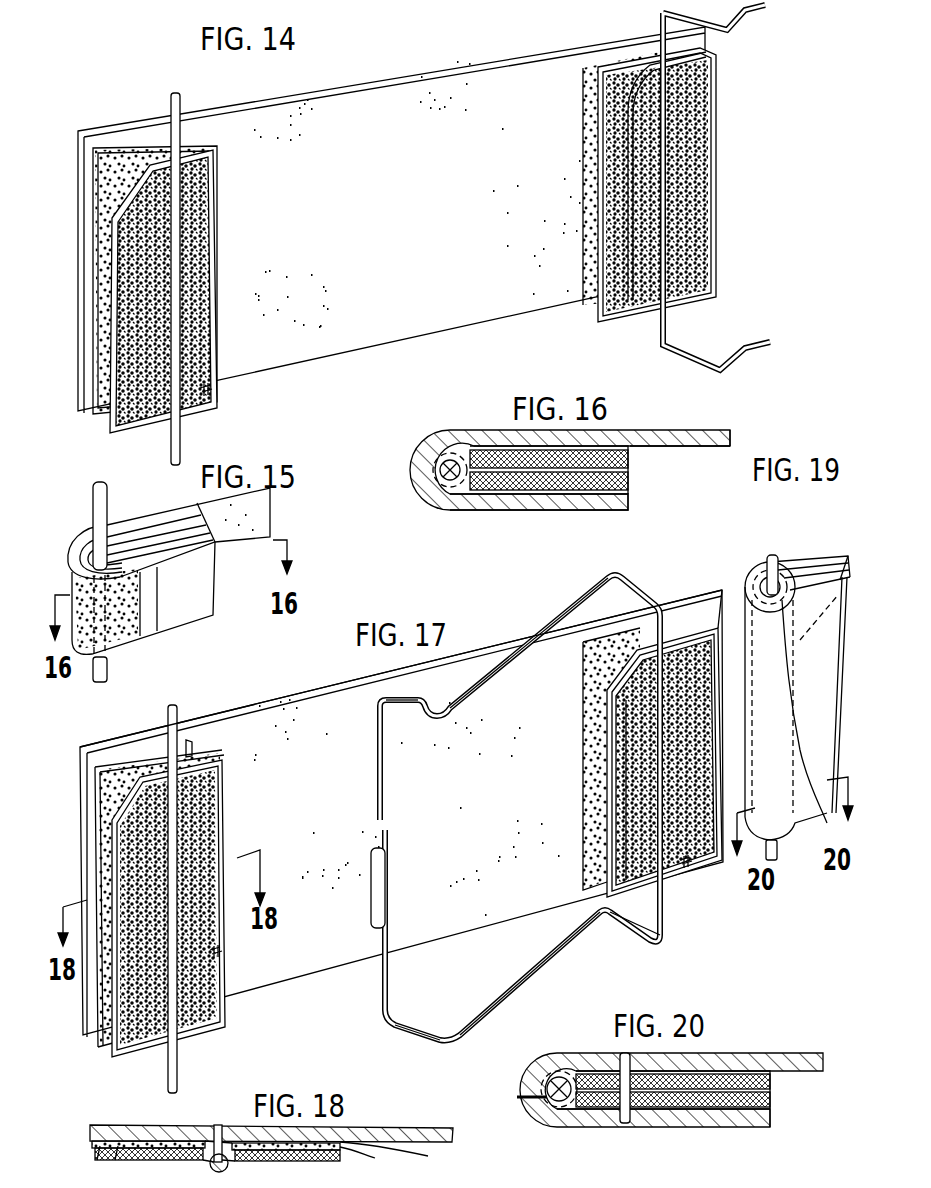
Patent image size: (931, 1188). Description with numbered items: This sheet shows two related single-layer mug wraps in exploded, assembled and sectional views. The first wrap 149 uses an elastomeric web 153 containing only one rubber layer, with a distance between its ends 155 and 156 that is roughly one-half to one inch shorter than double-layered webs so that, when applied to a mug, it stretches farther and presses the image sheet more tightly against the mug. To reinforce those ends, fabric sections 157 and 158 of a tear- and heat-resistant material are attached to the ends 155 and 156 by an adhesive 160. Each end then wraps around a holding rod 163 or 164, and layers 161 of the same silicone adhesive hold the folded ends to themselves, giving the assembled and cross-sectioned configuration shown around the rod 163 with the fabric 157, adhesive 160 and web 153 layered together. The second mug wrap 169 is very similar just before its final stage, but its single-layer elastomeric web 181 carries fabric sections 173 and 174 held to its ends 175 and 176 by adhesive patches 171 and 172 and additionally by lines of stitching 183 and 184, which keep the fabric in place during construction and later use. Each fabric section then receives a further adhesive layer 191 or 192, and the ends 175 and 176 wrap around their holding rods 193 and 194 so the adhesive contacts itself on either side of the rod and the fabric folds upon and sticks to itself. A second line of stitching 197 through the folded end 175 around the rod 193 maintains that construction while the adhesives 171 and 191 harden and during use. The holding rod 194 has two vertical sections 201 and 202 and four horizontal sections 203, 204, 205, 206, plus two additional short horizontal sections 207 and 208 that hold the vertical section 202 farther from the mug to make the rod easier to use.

In FIG. 14, the wrap 149 is at (318, 76).
In FIG. 15, the wrap 149 is at (58, 570).
In FIG. 16, the wrap 149 is at (634, 425).
In FIG. 14, the elastomeric web 153 is at (398, 334).
In FIG. 15, the elastomeric web 153 is at (262, 511).
In FIG. 16, the elastomeric web 153 is at (697, 424).
In FIG. 14, the end 155 is at (80, 342).
In FIG. 15, the end 155 is at (188, 504).
In FIG. 16, the end 155 is at (520, 511).
In FIG. 14, the end 156 is at (716, 174).
In FIG. 14, the fabric section 157 is at (214, 250).
In FIG. 16, the fabric section 157 is at (632, 455).
In FIG. 14, the fabric section 158 is at (713, 68).
In FIG. 14, the adhesive 160 is at (114, 148).
In FIG. 15, the adhesive 160 is at (153, 637).
In FIG. 16, the adhesive 160 is at (628, 485).
In FIG. 14, the adhesive layers 161 is at (212, 337).
In FIG. 14, the holding rod 163 is at (172, 92).
In FIG. 15, the holding rod 163 is at (95, 503).
In FIG. 16, the holding rod 163 is at (448, 486).
In FIG. 14, the holding rod 164 is at (750, 24).
In FIG. 19, the mug wrap 169 is at (793, 848).
In FIG. 17, the mug wrap 169 is at (347, 676).
In FIG. 18, the mug wrap 169 is at (350, 1120).
In FIG. 20, the mug wrap 169 is at (740, 1046).
In FIG. 19, the adhesive patch 171 is at (803, 565).
In FIG. 17, the adhesive patch 171 is at (104, 783).
In FIG. 18, the adhesive patch 171 is at (401, 1157).
In FIG. 20, the adhesive patch 171 is at (564, 1120).
In FIG. 17, the adhesive patch 172 is at (593, 667).
In FIG. 19, the fabric section 173 is at (828, 808).
In FIG. 17, the fabric section 173 is at (226, 766).
In FIG. 18, the fabric section 173 is at (372, 1159).
In FIG. 20, the fabric section 173 is at (664, 1106).
In FIG. 17, the fabric section 174 is at (637, 767).
In FIG. 19, the end 175 is at (848, 557).
In FIG. 17, the end 175 is at (96, 850).
In FIG. 18, the end 175 is at (95, 1126).
In FIG. 20, the end 175 is at (708, 1118).
In FIG. 17, the end 176 is at (707, 600).
In FIG. 19, the elastomeric web 181 is at (827, 557).
In FIG. 17, the elastomeric web 181 is at (348, 770).
In FIG. 18, the elastomeric web 181 is at (393, 1130).
In FIG. 20, the elastomeric web 181 is at (782, 1072).
In FIG. 19, the line of stitching 183 is at (750, 592).
In FIG. 17, the line of stitching 183 is at (147, 1030).
In FIG. 18, the line of stitching 183 is at (219, 1125).
In FIG. 20, the line of stitching 183 is at (518, 1095).
In FIG. 17, the line of stitching 184 is at (690, 868).
In FIG. 17, the adhesive layer 191 is at (222, 880).
In FIG. 18, the adhesive layer 191 is at (115, 1140).
In FIG. 20, the adhesive layer 191 is at (773, 1094).
In FIG. 17, the adhesive layer 192 is at (575, 822).
In FIG. 19, the holding rod 193 is at (770, 553).
In FIG. 17, the holding rod 193 is at (205, 696).
In FIG. 18, the holding rod 193 is at (195, 1142).
In FIG. 20, the holding rod 193 is at (548, 1118).
In FIG. 17, the holding rod 194 is at (492, 668).
In FIG. 19, the second line of stitching 197 is at (845, 557).
In FIG. 20, the second line of stitching 197 is at (624, 1122).
In FIG. 17, the vertical section 201 is at (655, 872).
In FIG. 17, the vertical section 202 is at (388, 850).
In FIG. 17, the horizontal section 203 is at (657, 602).
In FIG. 17, the horizontal section 204 is at (574, 603).
In FIG. 17, the horizontal section 205 is at (632, 926).
In FIG. 17, the horizontal section 206 is at (520, 982).
In FIG. 17, the short horizontal section 207 is at (430, 696).
In FIG. 17, the short horizontal section 208 is at (408, 1036).